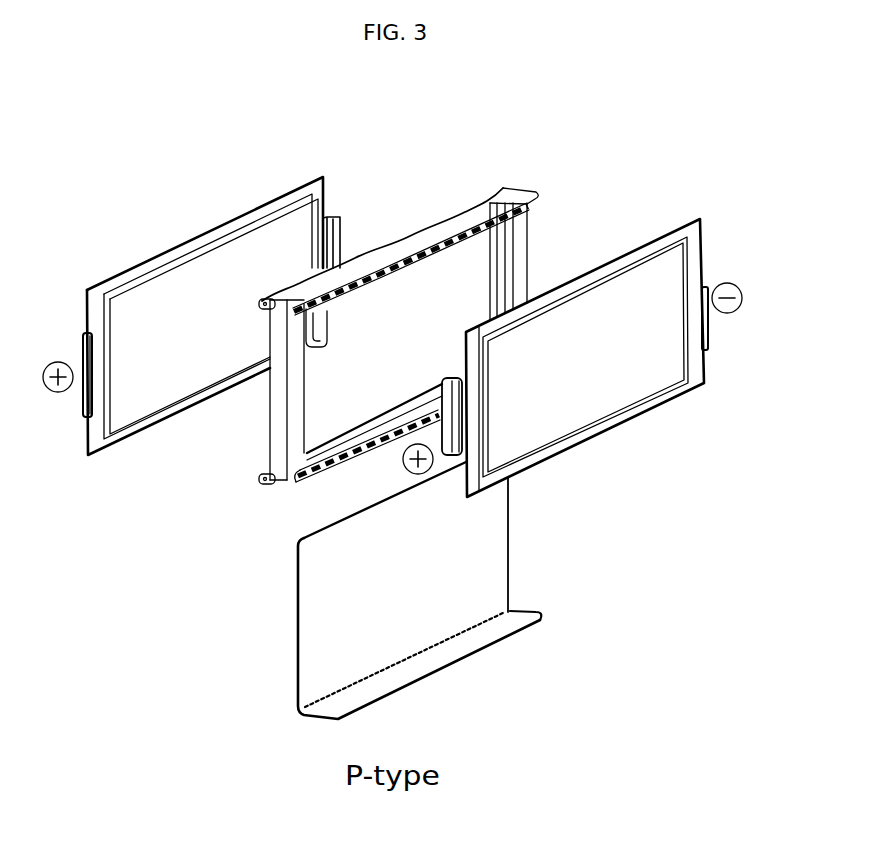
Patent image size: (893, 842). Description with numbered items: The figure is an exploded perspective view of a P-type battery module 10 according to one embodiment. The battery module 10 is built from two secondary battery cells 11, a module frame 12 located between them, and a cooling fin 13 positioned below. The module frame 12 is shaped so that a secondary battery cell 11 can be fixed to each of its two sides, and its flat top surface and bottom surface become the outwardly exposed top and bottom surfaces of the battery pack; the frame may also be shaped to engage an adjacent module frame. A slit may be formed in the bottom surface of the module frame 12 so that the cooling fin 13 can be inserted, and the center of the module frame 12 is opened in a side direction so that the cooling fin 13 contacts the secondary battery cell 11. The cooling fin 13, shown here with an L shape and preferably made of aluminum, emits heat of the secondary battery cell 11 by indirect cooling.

The battery module 10 is at (167, 112).
The secondary battery cell 11 is at (664, 232).
The module frame 12 is at (528, 248).
The cooling fin 13 is at (537, 617).